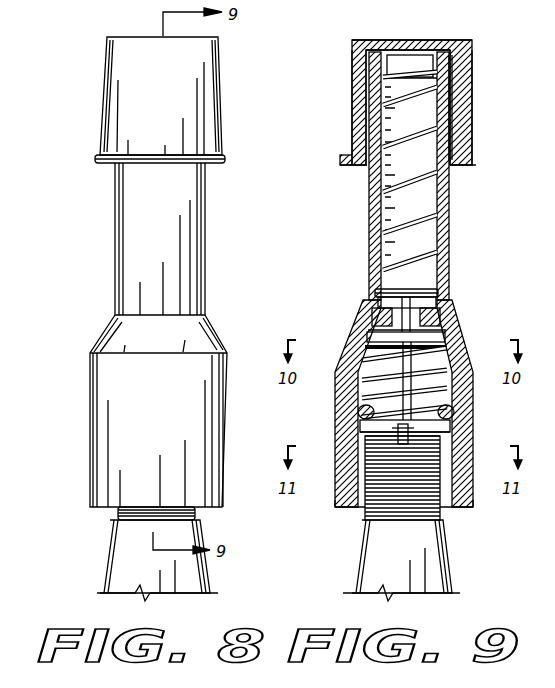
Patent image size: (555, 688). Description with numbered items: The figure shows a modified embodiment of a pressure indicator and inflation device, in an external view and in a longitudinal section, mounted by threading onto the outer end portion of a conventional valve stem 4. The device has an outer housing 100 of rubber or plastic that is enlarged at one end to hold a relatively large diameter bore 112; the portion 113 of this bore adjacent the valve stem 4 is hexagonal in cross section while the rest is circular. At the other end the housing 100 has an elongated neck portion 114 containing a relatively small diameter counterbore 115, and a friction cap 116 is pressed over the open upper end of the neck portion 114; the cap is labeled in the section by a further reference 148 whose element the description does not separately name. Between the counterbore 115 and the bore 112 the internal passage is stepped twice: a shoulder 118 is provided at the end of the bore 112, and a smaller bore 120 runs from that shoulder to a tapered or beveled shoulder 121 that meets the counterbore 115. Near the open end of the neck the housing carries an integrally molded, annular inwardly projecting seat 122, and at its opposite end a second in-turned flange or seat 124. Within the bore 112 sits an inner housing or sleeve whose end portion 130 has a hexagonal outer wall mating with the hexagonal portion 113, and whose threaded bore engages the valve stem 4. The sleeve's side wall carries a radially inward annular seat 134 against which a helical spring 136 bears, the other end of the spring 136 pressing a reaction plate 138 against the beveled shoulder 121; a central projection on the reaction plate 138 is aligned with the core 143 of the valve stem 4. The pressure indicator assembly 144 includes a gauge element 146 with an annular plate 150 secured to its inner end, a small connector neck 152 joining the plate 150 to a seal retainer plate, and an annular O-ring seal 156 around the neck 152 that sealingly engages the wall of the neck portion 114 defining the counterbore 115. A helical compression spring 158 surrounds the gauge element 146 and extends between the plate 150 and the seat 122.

In FIG. 8, the outer housing 100 is at (219, 314).
In FIG. 8, the friction cap 116 is at (125, 67).
In FIG. 9, the friction cap 116 is at (358, 60).
In FIG. 8, the elongated neck portion 114 is at (135, 210).
In FIG. 9, the elongated neck portion 114 is at (366, 170).
In FIG. 8, the valve stem 4 is at (125, 555).
In FIG. 9, the valve stem 4 is at (368, 555).
In FIG. 9, the annular inwardly projecting seat 122 is at (385, 53).
In FIG. 9, the gauge element 146 is at (404, 47).
In FIG. 9, the cap side wall 148 is at (355, 92).
In FIG. 9, the pressure indicator assembly 144 is at (454, 95).
In FIG. 9, the small diameter counterbore 115 is at (456, 141).
In FIG. 9, the helical compression spring 158 is at (440, 214).
In FIG. 9, the connector neck 152 is at (410, 302).
In FIG. 9, the annular plate 150 is at (375, 292).
In FIG. 9, the O-ring seal 156 is at (380, 305).
In FIG. 9, the reaction plate 138 is at (372, 320).
In FIG. 9, the tapered or beveled shoulder 121 is at (442, 327).
In FIG. 9, the bore 120 is at (368, 351).
In FIG. 9, the hexagonal portion of bore 113 is at (350, 452).
In FIG. 9, the helical spring 136 is at (456, 350).
In FIG. 9, the large diameter bore 112 is at (352, 405).
In FIG. 9, the shoulder 118 is at (455, 406).
In FIG. 9, the valve core 143 is at (360, 428).
In FIG. 9, the annular seat 134 is at (452, 431).
In FIG. 9, the end portion 130 is at (456, 461).
In FIG. 9, the second in-turned flange or seat 124 is at (346, 511).